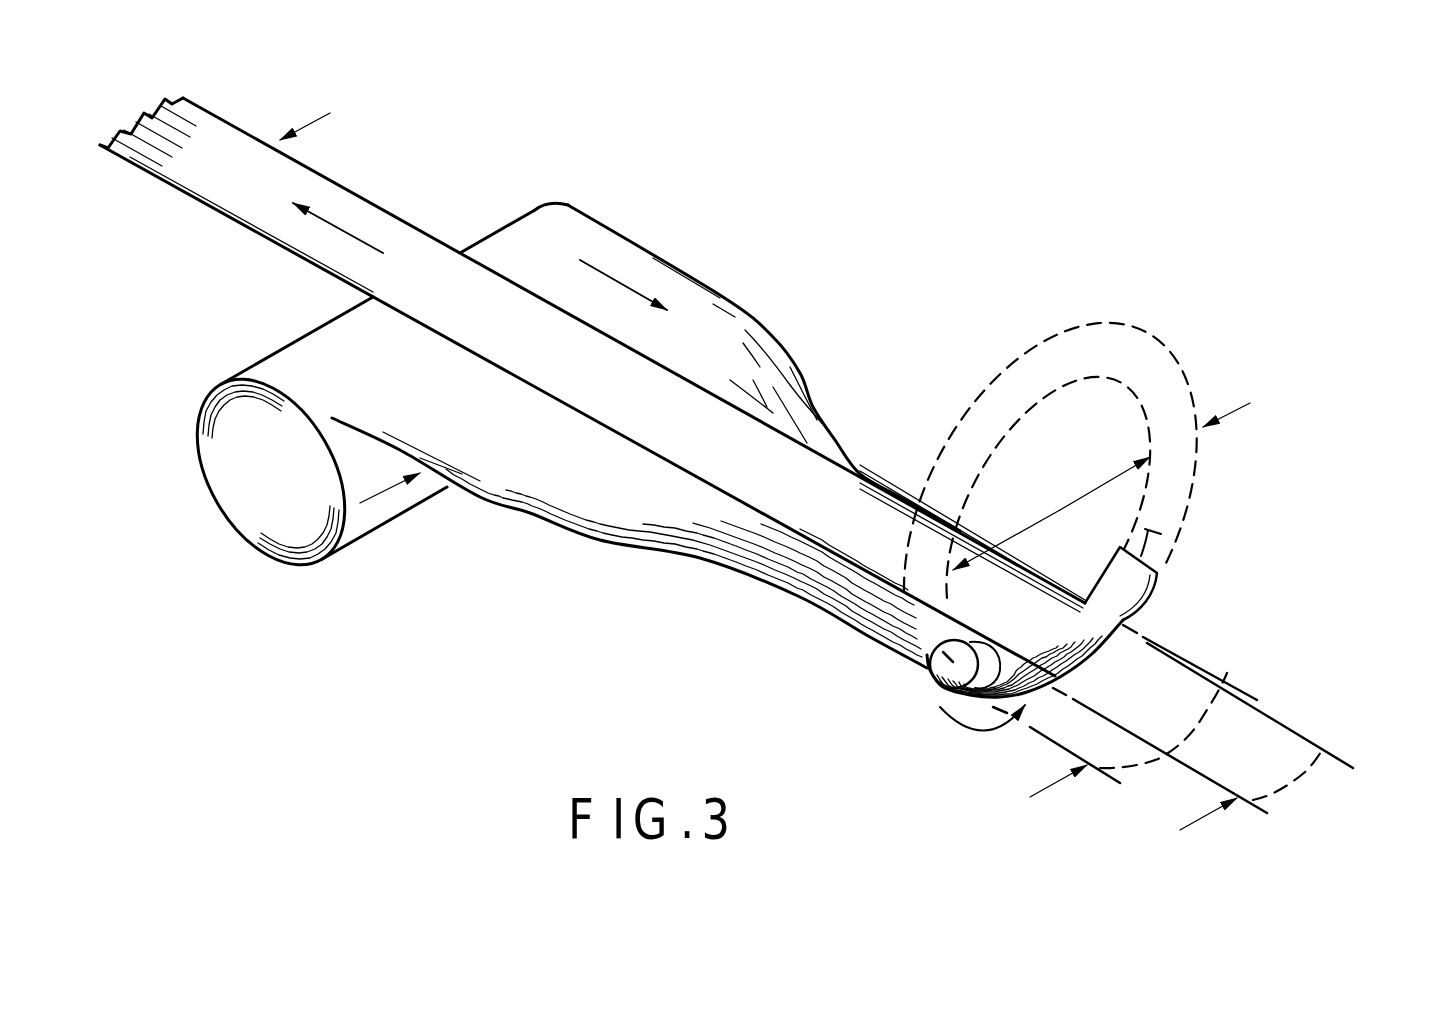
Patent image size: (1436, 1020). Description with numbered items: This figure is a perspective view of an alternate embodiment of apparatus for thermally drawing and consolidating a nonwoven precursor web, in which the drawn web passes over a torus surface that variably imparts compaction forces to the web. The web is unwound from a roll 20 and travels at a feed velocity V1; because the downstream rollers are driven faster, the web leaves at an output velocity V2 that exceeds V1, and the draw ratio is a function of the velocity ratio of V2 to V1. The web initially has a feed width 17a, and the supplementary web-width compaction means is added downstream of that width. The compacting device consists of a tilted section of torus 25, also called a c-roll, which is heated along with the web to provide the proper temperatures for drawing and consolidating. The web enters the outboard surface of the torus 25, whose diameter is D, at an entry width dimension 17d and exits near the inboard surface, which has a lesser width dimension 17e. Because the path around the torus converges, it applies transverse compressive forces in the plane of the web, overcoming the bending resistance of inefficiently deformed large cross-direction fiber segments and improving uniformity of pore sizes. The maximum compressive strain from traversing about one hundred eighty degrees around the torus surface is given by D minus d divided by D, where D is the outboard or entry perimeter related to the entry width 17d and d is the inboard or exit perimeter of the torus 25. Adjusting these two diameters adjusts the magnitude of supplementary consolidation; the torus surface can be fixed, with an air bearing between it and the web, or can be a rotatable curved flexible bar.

The roll 20 is at (248, 478).
The feed width 17a is at (730, 297).
The lesser width dimension 17e is at (183, 197).
The entry width dimension 17d is at (1233, 678).
The torus section 25 is at (1135, 577).
The outboard diameter of the torus D is at (900, 597).
The inboard diameter of the torus d is at (1060, 510).
The feed velocity V1 is at (617, 280).
The output velocity V2 is at (337, 225).